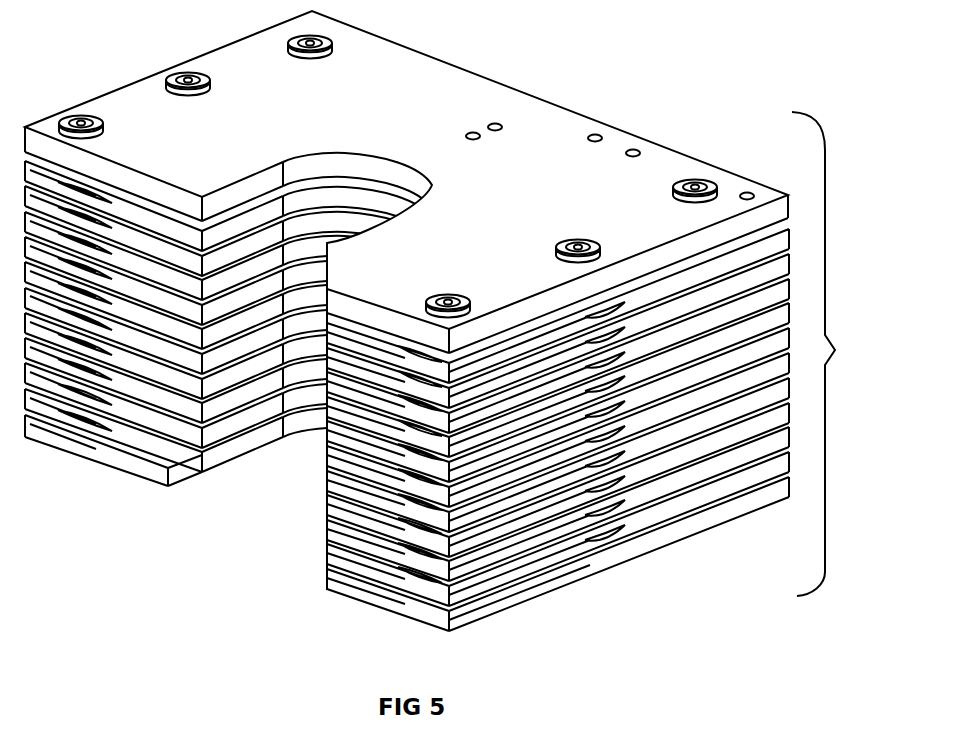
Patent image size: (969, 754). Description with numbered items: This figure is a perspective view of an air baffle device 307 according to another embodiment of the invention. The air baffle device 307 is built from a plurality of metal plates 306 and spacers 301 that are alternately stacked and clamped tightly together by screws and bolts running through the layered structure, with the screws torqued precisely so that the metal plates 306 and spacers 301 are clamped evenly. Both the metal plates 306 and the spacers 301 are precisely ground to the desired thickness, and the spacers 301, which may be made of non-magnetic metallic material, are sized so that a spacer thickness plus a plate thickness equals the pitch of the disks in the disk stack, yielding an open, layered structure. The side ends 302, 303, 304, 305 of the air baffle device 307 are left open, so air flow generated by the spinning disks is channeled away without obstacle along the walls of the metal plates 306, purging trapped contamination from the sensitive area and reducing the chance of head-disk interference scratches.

The spacers 301 is at (417, 597).
The side end 302 is at (236, 539).
The side end 303 is at (672, 590).
The side end 304 is at (607, 85).
The side end 305 is at (143, 57).
The metal plates 306 is at (148, 445).
The air baffle device 307 is at (461, 331).